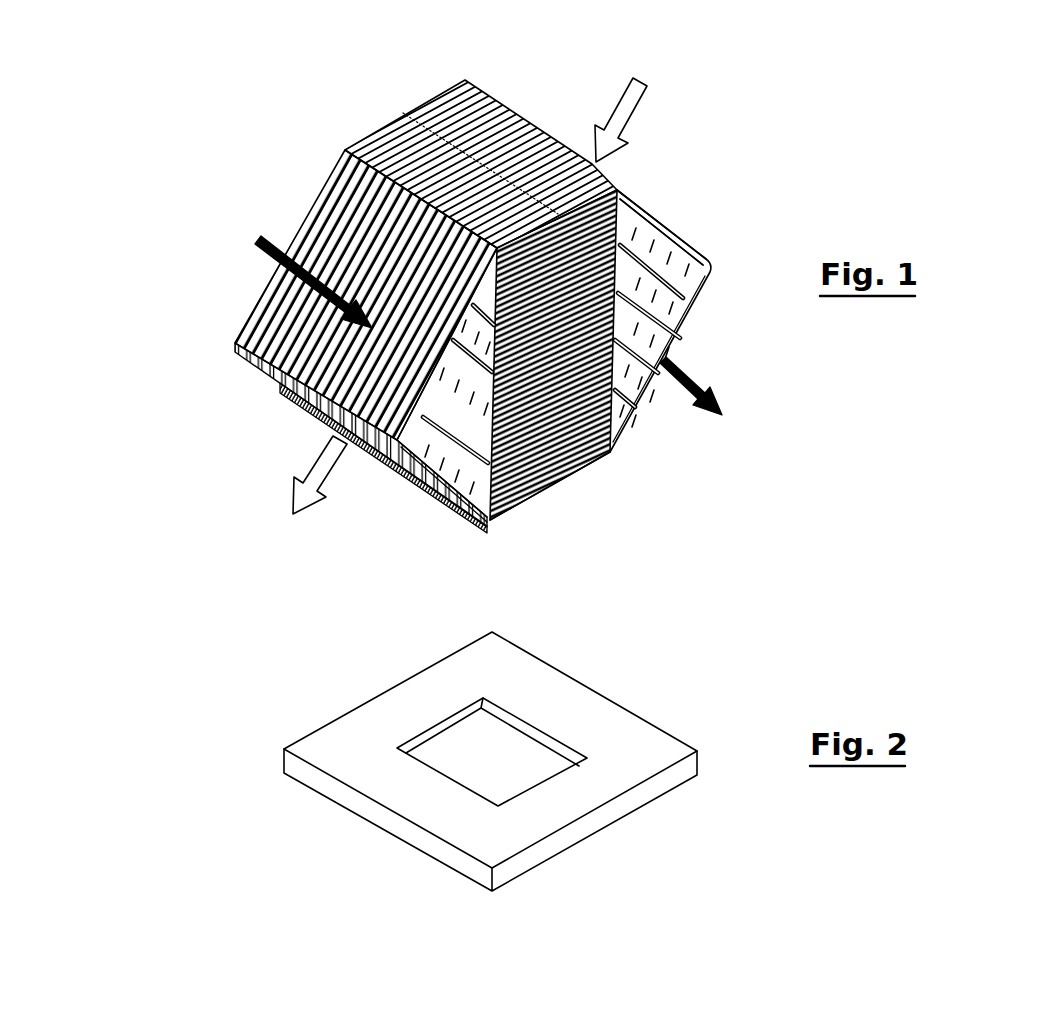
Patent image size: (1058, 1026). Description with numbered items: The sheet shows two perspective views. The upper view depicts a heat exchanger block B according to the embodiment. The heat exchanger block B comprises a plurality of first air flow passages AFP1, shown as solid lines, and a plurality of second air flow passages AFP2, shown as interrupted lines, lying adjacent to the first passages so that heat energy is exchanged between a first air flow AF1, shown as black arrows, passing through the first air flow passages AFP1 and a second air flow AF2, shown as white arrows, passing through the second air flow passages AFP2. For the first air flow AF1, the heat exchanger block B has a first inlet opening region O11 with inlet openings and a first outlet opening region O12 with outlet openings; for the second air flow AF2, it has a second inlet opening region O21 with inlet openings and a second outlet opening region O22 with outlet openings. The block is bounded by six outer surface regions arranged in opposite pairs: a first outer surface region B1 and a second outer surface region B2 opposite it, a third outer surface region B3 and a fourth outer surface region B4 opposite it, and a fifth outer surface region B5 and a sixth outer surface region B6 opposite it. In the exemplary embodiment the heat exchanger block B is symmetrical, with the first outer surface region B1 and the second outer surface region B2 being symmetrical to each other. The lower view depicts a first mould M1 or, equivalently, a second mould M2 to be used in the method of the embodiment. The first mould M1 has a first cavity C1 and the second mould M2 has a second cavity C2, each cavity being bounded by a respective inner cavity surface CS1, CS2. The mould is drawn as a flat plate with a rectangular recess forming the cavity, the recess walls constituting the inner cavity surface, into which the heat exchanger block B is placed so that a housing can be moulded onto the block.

In FIG. 1, the heat exchanger block B is at (684, 127).
In FIG. 1, the first outer surface region B1 is at (542, 500).
In FIG. 1, the second outer surface region B2 is at (493, 146).
In FIG. 1, the third outer surface region B3 is at (712, 273).
In FIG. 1, the fourth outer surface region B4 is at (292, 374).
In FIG. 1, the fifth outer surface region B5 is at (300, 218).
In FIG. 1, the sixth outer surface region B6 is at (610, 428).
In FIG. 1, the first inlet opening region O11 is at (320, 318).
In FIG. 1, the first outlet opening region O12 is at (676, 348).
In FIG. 1, the second inlet opening region O21 is at (650, 197).
In FIG. 1, the second outlet opening region O22 is at (312, 415).
In FIG. 1, the first air flow AF1 is at (260, 263).
In FIG. 1, the second air flow AF2 is at (622, 110).
In FIG. 1, the first air flow passages AFP1 is at (965, 206).
In FIG. 1, the second air flow passages AFP2 is at (950, 341).
In FIG. 2, the first mould M1 is at (431, 789).
In FIG. 2, the second mould M2 is at (335, 827).
In FIG. 2, the first cavity C1 is at (550, 822).
In FIG. 2, the second cavity C2 is at (522, 775).
In FIG. 2, the inner cavity surface CS1 is at (447, 822).
In FIG. 2, the inner cavity surface CS2 is at (474, 758).